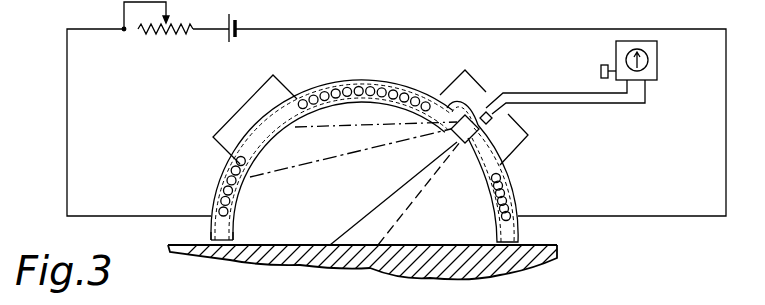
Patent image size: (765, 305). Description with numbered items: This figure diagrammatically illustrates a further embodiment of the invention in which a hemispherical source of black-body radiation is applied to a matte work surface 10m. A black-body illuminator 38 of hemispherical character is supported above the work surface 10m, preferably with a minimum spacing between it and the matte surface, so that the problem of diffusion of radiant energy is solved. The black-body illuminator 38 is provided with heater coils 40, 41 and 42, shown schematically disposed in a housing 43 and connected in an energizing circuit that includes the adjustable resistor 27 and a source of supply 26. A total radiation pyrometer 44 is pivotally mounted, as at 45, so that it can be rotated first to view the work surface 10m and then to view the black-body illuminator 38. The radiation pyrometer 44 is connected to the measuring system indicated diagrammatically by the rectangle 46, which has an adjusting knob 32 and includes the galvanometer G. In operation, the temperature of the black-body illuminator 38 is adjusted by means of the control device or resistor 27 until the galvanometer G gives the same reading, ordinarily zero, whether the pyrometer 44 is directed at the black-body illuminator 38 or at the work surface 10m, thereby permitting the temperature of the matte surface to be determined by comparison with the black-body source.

The work surface 10m is at (435, 245).
The source of supply 26 is at (233, 42).
The adjustable resistor 27 is at (177, 40).
The adjusting knob 32 is at (601, 68).
The black-body illuminator 38 is at (235, 213).
The heater coil 40 is at (220, 183).
The heater coil 41 is at (393, 86).
The heater coil 42 is at (512, 187).
The housing 43 is at (345, 83).
The total radiation pyrometer 44 is at (487, 100).
The pivot mounting 45 is at (492, 118).
The measuring system 46 is at (653, 75).
The galvanometer G is at (650, 58).